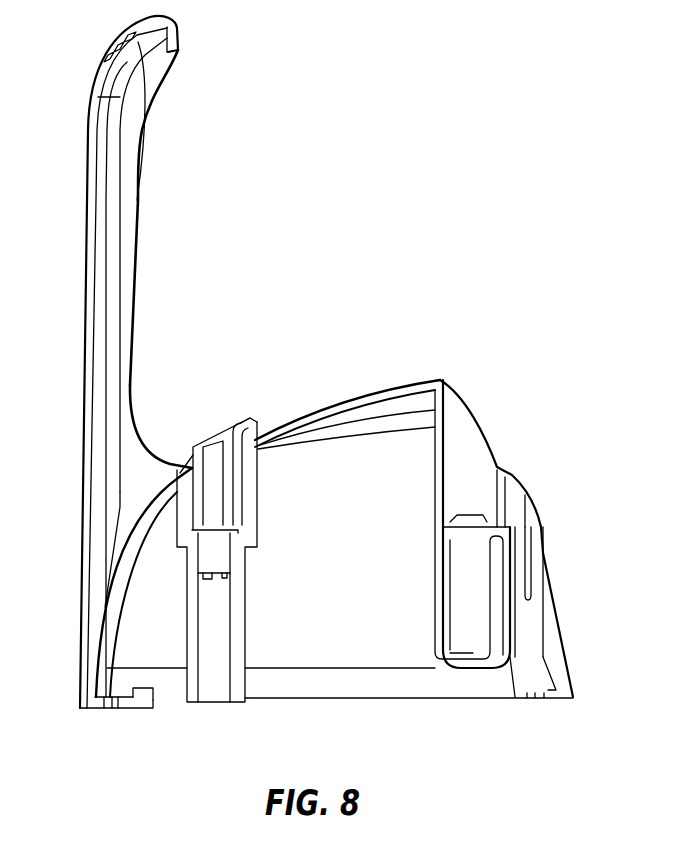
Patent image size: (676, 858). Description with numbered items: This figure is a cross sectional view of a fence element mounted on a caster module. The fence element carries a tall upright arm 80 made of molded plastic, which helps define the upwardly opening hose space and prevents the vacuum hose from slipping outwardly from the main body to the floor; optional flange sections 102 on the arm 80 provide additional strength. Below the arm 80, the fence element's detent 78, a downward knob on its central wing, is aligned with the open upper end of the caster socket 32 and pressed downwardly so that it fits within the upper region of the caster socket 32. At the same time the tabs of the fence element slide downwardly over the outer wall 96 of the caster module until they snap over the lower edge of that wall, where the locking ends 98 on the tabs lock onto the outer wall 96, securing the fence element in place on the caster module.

The arm 80 is at (139, 232).
The flange sections 102 is at (143, 457).
The outer wall 96 is at (97, 662).
The locking ends 98 is at (130, 690).
The detent 78 is at (233, 490).
The caster socket 32 is at (230, 686).